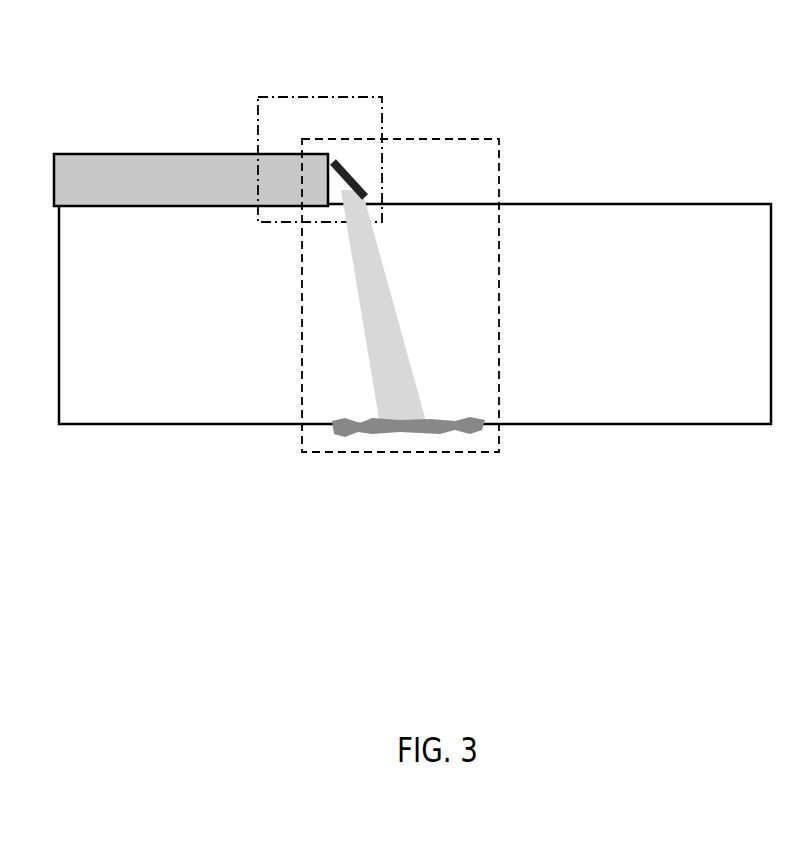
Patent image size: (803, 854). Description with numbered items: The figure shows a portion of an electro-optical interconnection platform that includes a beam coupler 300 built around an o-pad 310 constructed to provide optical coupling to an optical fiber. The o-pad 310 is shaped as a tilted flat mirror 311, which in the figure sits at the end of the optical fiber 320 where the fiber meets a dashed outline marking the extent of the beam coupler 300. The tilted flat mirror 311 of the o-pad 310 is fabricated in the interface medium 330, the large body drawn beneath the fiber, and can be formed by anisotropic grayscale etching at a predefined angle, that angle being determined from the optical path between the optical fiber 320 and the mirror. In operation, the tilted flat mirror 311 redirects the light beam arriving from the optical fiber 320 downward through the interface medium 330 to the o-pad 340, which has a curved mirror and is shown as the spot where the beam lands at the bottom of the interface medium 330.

The beam coupler 300 is at (495, 308).
The o-pad 310 is at (320, 103).
The tilted flat mirror 311 is at (355, 177).
The optical fiber 320 is at (168, 190).
The interface medium 330 is at (740, 247).
The o-pad 340 is at (443, 420).